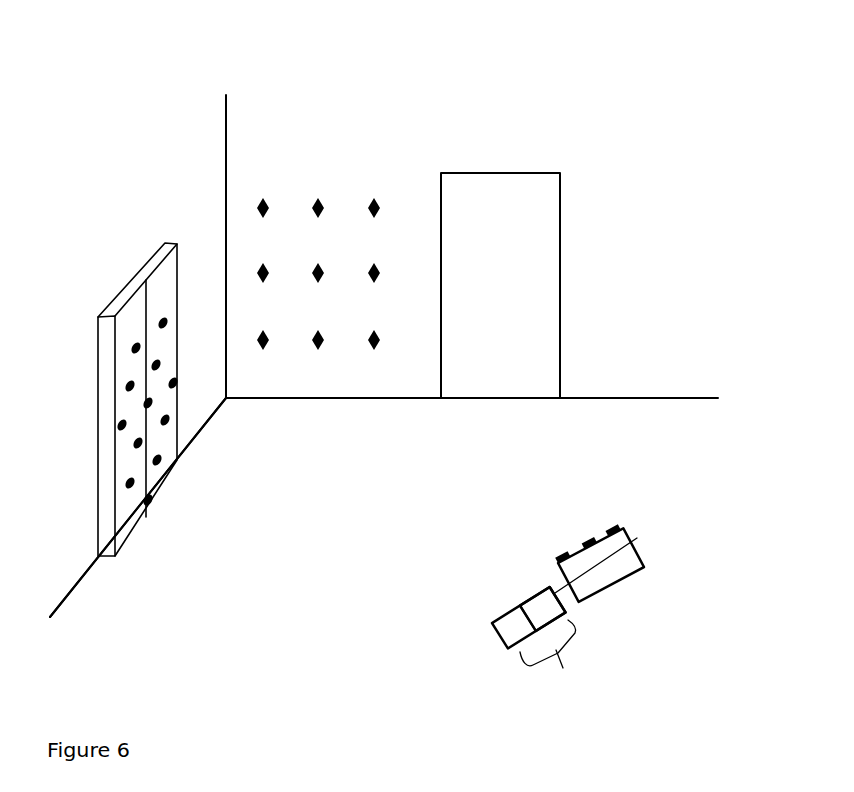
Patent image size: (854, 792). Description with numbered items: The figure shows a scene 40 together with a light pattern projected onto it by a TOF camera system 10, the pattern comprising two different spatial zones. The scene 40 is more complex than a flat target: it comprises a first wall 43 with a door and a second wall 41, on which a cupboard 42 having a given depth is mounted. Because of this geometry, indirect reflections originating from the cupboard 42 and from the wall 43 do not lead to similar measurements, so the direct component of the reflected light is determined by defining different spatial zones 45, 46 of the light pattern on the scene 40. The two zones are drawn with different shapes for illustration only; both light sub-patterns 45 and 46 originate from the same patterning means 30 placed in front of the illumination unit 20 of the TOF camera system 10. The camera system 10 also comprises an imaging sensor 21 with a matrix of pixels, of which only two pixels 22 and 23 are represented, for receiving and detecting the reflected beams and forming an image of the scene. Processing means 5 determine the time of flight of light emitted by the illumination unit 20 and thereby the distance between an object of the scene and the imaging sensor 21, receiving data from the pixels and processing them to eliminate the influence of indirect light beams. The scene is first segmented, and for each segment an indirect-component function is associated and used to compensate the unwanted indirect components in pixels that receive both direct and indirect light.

The scene 40 is at (190, 143).
The second wall 41 is at (67, 482).
The cupboard 42 is at (103, 350).
The first wall 43 is at (617, 226).
The spatial zone of light pattern 45 is at (325, 180).
The spatial zone of light pattern 46 is at (173, 468).
The TOF camera system 10 is at (516, 537).
The processing means 5 is at (623, 572).
The illumination unit 20 is at (622, 543).
The patterning means 30 is at (617, 528).
The imaging sensor 21 is at (559, 656).
The pixel 22 is at (505, 642).
The pixel 23 is at (542, 597).